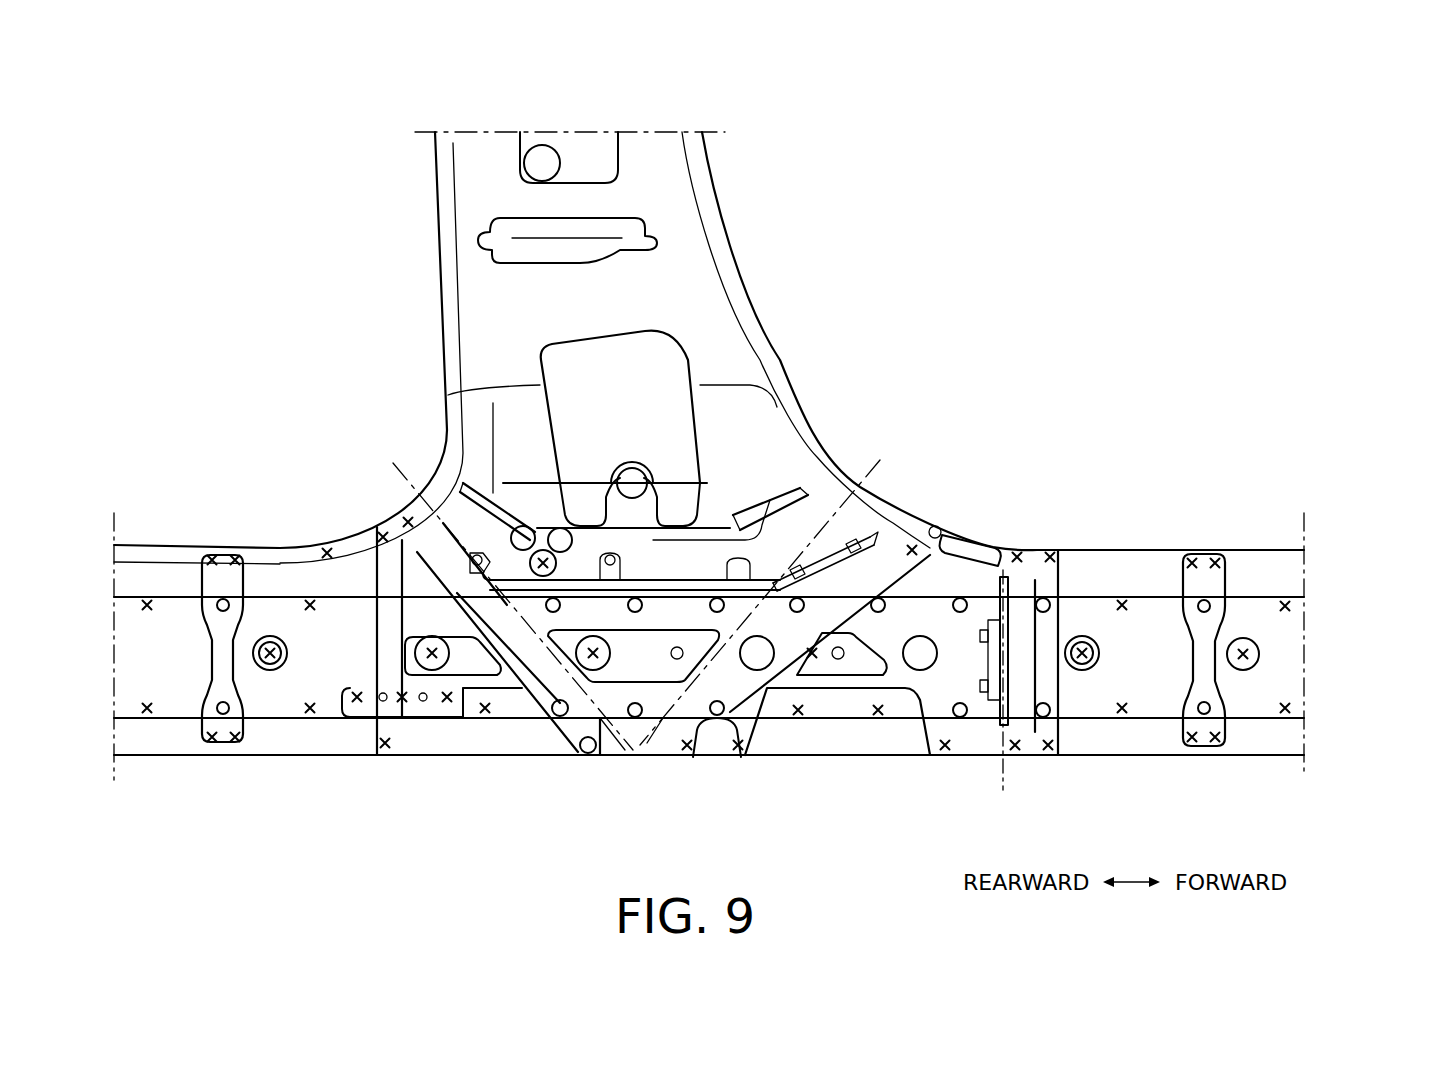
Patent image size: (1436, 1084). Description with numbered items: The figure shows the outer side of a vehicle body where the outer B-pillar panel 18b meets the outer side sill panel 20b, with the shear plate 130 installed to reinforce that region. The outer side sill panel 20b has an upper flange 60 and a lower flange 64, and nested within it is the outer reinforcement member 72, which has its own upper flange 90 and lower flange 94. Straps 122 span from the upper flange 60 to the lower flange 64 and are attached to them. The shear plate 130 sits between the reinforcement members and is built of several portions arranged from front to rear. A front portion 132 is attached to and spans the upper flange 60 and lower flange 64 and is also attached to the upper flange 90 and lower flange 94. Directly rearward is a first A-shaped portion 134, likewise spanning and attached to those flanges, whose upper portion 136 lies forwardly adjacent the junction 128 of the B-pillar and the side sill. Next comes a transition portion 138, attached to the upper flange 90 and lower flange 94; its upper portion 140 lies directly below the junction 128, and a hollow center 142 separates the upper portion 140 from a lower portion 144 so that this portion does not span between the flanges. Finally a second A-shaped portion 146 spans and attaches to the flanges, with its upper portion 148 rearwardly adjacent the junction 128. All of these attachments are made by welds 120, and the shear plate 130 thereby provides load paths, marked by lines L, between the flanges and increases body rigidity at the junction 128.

The outer B-pillar panel 18b is at (670, 187).
The outer side sill panel 20b is at (1143, 672).
The upper flange 60 is at (1100, 554).
The lower flange 64 is at (1088, 747).
The outer reinforcement member 72 is at (273, 613).
The upper flange 90 is at (1072, 597).
The lower flange 94 is at (1063, 713).
The weld 120 is at (147, 603).
The strap 122 is at (215, 583).
The junction 128 is at (820, 478).
The shear plate 130 is at (887, 643).
The front portion 132 is at (1033, 550).
The first A-shaped portion 134 is at (920, 613).
The upper portion 136 is at (905, 545).
The transition portion 138 is at (593, 617).
The upper portion 140 is at (683, 613).
The hollow center 142 is at (647, 657).
The lower portion 144 is at (607, 752).
The second A-shaped portion 146 is at (433, 615).
The upper portion 148 is at (380, 527).